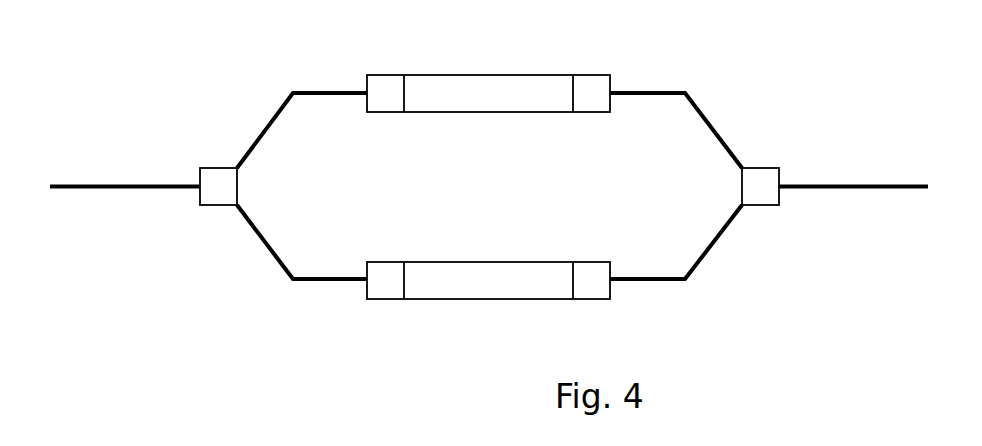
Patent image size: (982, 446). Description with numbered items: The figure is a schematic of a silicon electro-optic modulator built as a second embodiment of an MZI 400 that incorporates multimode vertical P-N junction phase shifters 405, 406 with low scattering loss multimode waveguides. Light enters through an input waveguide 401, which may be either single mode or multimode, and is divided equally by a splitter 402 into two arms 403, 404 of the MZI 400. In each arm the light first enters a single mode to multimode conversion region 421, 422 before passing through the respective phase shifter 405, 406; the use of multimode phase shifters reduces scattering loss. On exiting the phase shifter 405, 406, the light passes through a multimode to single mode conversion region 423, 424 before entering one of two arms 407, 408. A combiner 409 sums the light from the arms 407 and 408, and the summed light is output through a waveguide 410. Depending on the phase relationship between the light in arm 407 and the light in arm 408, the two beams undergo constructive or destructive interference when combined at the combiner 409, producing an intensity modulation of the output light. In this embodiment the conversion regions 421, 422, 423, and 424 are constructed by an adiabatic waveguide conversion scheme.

The MZI 400 is at (260, 284).
The input waveguide 401 is at (105, 186).
The splitter 402 is at (217, 187).
The arm 403 is at (260, 138).
The arm 404 is at (262, 242).
The phase shifter 405 is at (514, 106).
The phase shifter 406 is at (514, 294).
The arm 407 is at (702, 110).
The arm 408 is at (717, 242).
The combiner 409 is at (752, 185).
The waveguide 410 is at (868, 186).
The single mode to multimode conversion region 421 is at (383, 93).
The single mode to multimode conversion region 422 is at (385, 272).
The multimode to single mode conversion region 423 is at (588, 93).
The multimode to single mode conversion region 424 is at (587, 272).